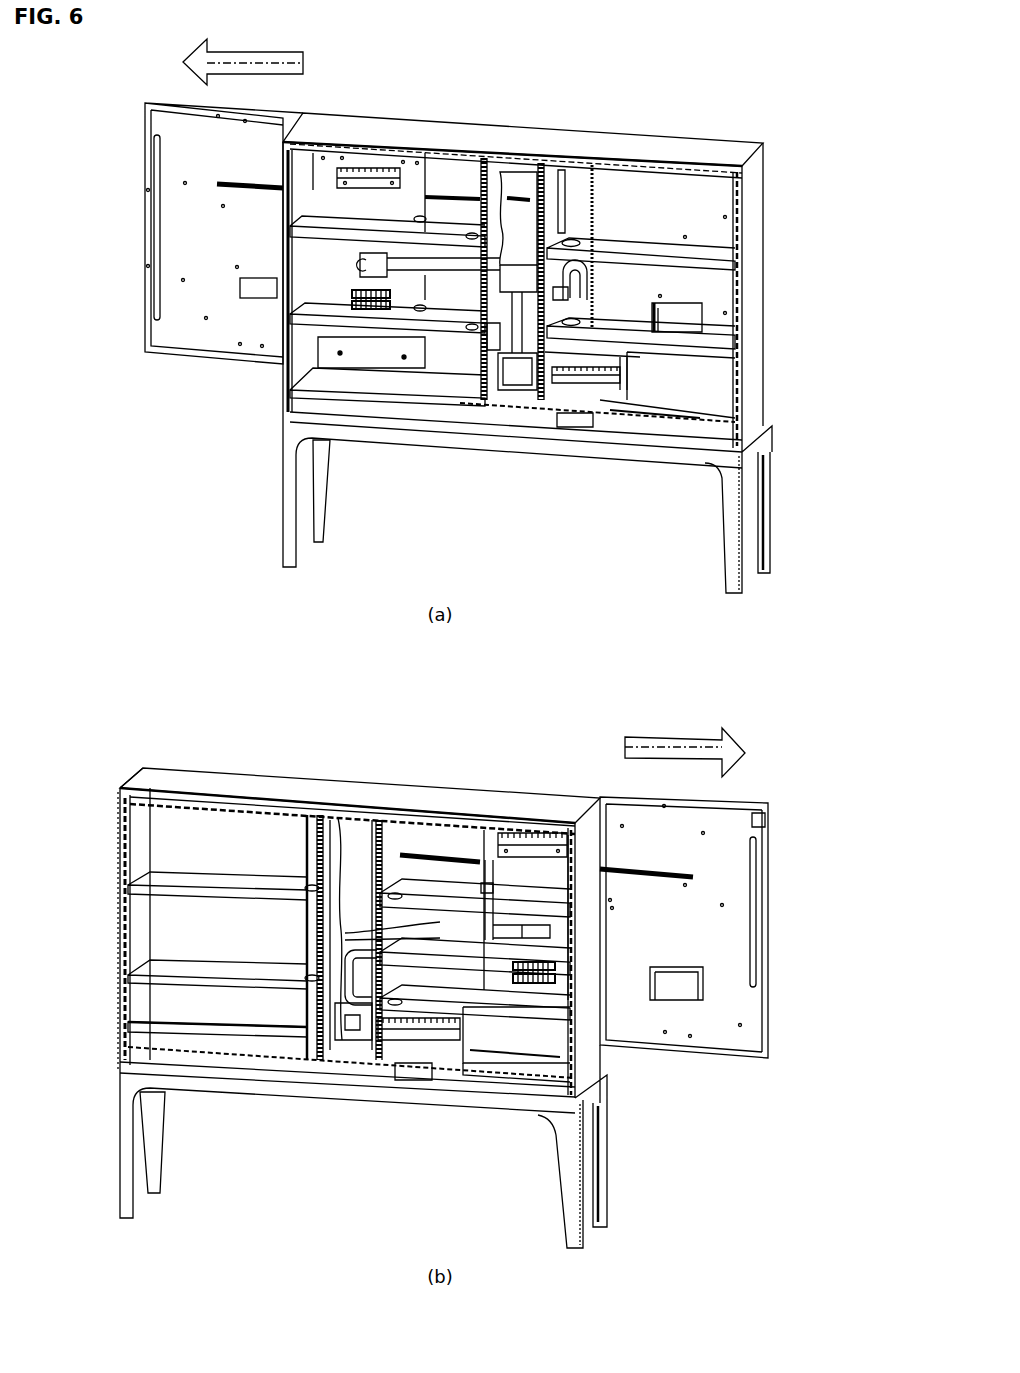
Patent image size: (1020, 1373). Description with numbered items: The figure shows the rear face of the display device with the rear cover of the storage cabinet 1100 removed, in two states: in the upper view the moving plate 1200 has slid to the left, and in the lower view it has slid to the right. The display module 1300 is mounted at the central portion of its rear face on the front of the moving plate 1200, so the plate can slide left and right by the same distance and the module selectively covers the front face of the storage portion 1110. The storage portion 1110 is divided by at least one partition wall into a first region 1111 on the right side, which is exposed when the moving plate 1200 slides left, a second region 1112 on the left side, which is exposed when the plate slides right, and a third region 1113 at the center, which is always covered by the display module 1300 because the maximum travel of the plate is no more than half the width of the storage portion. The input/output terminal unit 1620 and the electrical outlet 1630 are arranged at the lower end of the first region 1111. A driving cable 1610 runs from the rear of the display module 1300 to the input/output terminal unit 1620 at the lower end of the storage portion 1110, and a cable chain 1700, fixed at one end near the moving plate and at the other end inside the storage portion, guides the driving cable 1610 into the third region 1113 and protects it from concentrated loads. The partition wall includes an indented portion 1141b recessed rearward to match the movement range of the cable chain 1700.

The storage cabinet 1100 is at (118, 873).
The storage portion 1110 is at (707, 203).
The first region 1111 is at (692, 178).
The second region 1112 is at (243, 805).
The third region 1113 is at (500, 177).
The indented portion 1141b is at (345, 940).
The moving plate 1200 is at (385, 166).
The display module 1300 is at (177, 159).
The driving cable 1610 is at (523, 390).
The input/output terminal unit 1620 is at (603, 383).
The electrical outlet 1630 is at (673, 395).
The cable chain 1700 is at (445, 268).